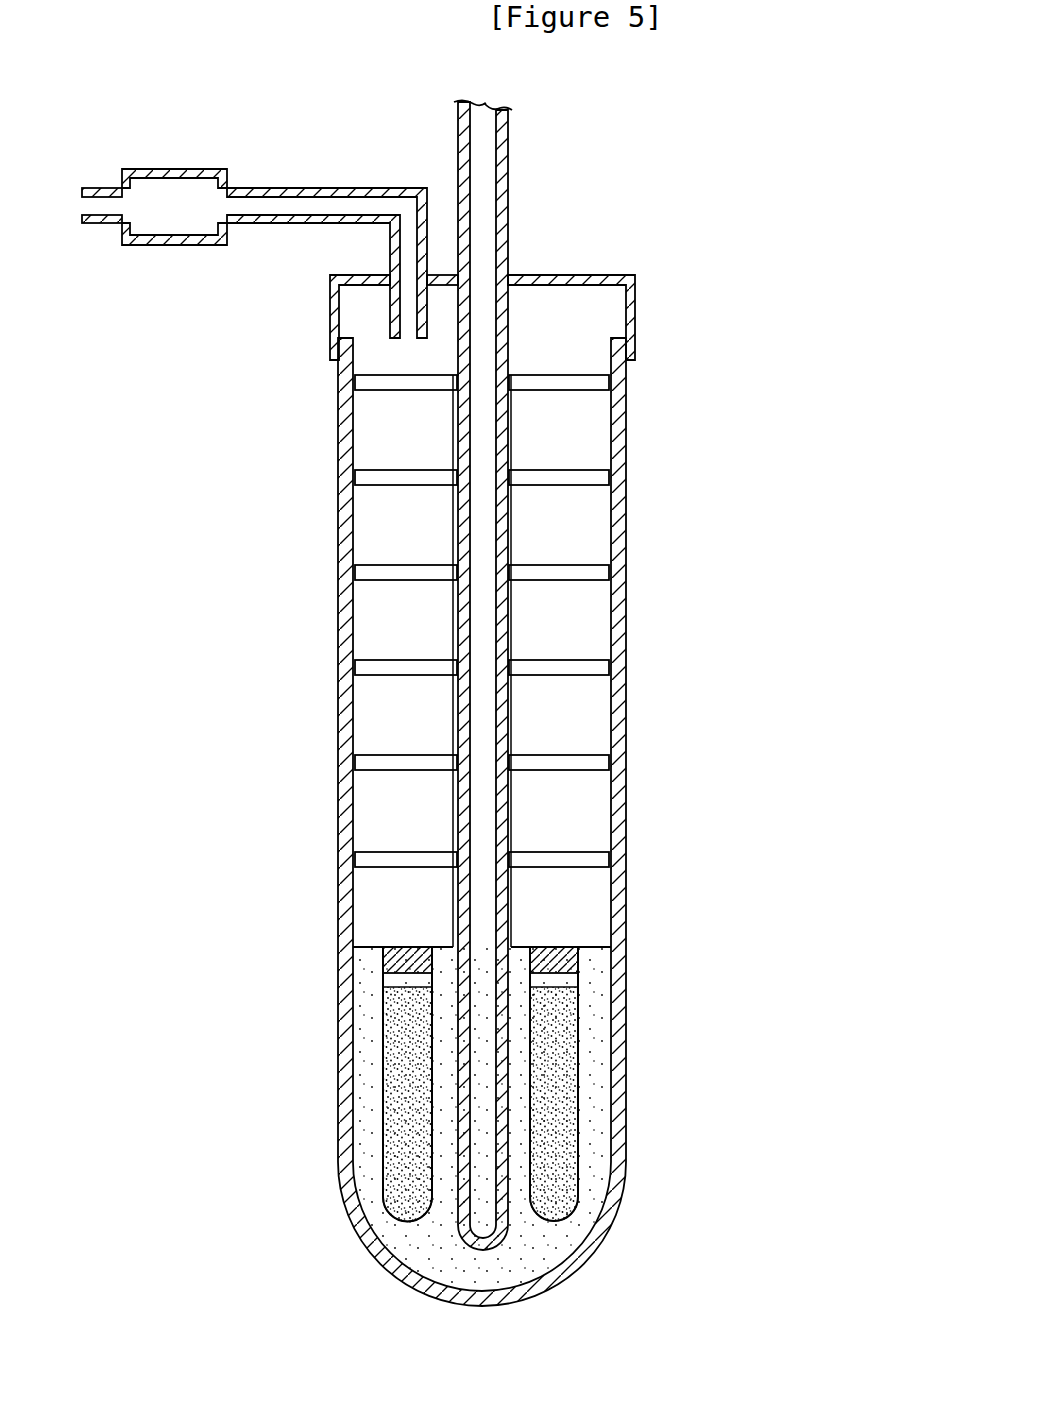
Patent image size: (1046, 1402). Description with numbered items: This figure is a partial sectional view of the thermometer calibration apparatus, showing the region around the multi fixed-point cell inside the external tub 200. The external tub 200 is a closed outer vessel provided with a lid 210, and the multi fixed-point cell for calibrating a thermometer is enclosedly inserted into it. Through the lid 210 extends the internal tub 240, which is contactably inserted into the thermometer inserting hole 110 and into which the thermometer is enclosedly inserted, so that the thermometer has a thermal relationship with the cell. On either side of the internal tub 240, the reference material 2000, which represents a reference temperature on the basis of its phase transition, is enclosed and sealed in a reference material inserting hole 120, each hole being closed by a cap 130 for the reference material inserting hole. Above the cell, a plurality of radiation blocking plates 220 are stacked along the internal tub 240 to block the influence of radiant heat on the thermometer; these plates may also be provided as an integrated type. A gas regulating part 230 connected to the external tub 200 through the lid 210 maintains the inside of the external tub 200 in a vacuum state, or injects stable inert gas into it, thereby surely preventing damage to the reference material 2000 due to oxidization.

The thermometer inserting hole 110 is at (500, 1083).
The reference material inserting hole 120 is at (562, 1150).
The cap for the reference material inserting hole 130 is at (578, 955).
The external tub 200 is at (617, 590).
The lid 210 is at (632, 310).
The radiation blocking plate 220 is at (590, 765).
The gas regulating part 230 is at (157, 227).
The internal tub 240 is at (505, 522).
The reference material 2000 is at (380, 1098).